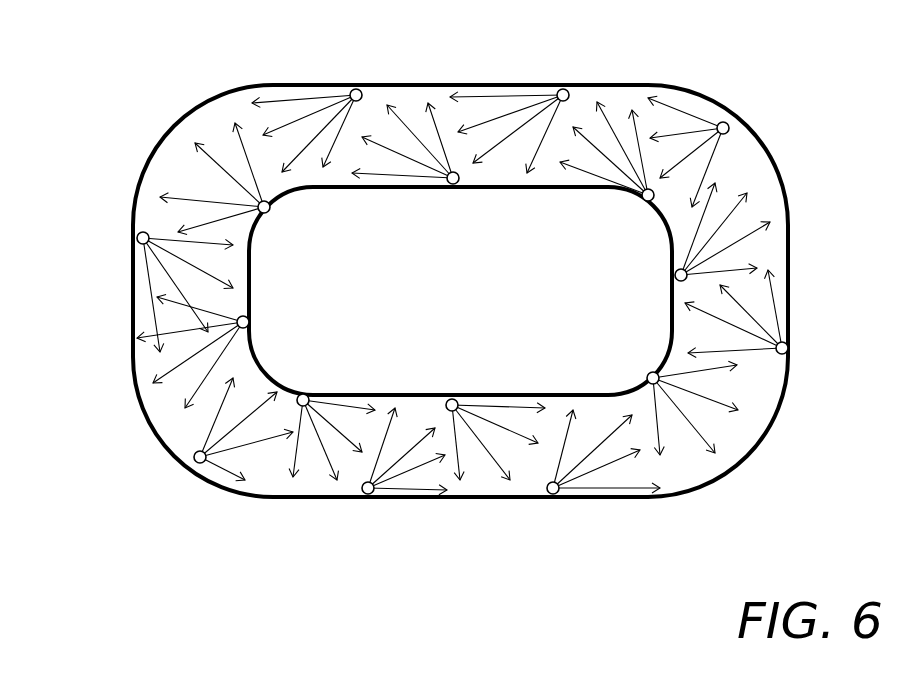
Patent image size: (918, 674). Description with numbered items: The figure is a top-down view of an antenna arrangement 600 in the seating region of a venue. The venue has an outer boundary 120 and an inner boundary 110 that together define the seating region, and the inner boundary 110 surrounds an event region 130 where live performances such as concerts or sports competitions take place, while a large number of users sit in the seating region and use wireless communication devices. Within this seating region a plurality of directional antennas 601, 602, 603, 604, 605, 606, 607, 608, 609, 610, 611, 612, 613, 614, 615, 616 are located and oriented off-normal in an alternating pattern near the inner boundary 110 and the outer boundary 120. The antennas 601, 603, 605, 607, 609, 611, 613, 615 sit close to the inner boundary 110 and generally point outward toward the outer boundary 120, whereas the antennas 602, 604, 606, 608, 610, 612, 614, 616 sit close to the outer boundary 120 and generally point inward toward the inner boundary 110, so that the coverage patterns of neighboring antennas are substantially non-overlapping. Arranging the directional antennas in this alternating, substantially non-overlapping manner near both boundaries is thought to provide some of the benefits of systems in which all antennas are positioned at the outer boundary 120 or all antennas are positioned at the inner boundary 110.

The arrangement of directional antennas 600 is at (457, 285).
The outer boundary 120 is at (788, 203).
The inner boundary 110 is at (252, 248).
The event region 130 is at (412, 278).
The directional antenna 601 is at (270, 212).
The directional antenna 602 is at (354, 88).
The directional antenna 603 is at (453, 185).
The directional antenna 604 is at (565, 88).
The directional antenna 605 is at (644, 201).
The directional antenna 606 is at (728, 125).
The directional antenna 607 is at (674, 279).
The directional antenna 608 is at (789, 349).
The directional antenna 609 is at (649, 373).
The directional antenna 610 is at (556, 495).
The directional antenna 611 is at (452, 398).
The directional antenna 612 is at (367, 495).
The directional antenna 613 is at (307, 394).
The directional antenna 614 is at (196, 462).
The directional antenna 615 is at (250, 322).
The directional antenna 616 is at (136, 237).